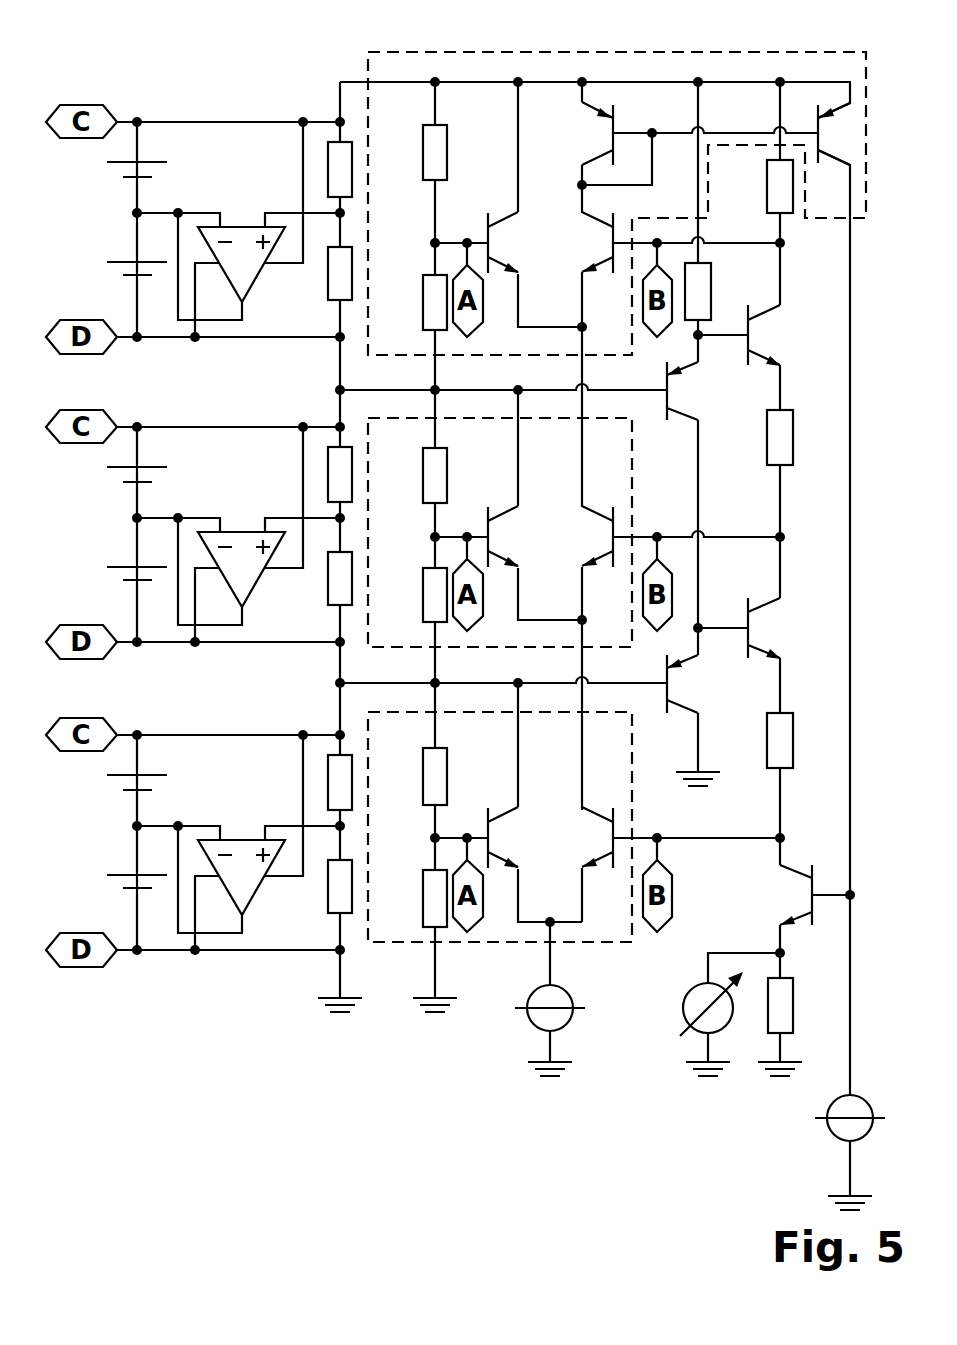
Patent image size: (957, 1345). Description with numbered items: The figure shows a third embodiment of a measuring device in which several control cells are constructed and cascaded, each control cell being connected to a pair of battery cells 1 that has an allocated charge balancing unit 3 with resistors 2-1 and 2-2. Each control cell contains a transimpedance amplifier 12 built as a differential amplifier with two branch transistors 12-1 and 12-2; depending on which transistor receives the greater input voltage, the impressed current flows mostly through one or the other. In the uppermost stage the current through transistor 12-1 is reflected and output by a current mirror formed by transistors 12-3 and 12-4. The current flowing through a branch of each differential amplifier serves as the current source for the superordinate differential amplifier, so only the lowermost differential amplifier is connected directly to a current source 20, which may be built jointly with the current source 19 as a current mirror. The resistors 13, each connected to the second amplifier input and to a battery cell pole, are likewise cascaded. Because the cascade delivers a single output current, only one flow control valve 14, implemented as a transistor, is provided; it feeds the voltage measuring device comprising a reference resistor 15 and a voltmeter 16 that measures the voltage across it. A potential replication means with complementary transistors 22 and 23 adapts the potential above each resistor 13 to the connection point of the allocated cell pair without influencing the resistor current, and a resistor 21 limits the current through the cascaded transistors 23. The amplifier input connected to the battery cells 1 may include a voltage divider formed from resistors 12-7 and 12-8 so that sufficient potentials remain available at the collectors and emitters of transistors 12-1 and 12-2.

The battery cell 1 is at (123, 176).
The resistor of the charge balancing unit 2-1 is at (328, 170).
The resistor of the charge balancing unit 2-2 is at (328, 268).
The charge balancing unit 3 is at (232, 226).
The transimpedance amplifier 12 is at (367, 52).
The transistor of the differential amplifier 12-1 is at (492, 237).
The transistor of the differential amplifier 12-2 is at (610, 258).
The current mirror transistor 12-3 is at (611, 140).
The current mirror transistor 12-4 is at (820, 112).
The voltage divider resistor 12-7 is at (423, 152).
The voltage divider resistor 12-8 is at (423, 303).
The resistor 13 is at (767, 187).
The flow control valve 14 is at (810, 893).
The reference resistor 15 is at (768, 1016).
The voltmeter 16 is at (690, 1022).
The current source 19 is at (832, 1134).
The current source 20 is at (528, 1023).
The resistor 21 is at (712, 282).
The transistor 22 is at (750, 335).
The transistor 23 is at (669, 395).